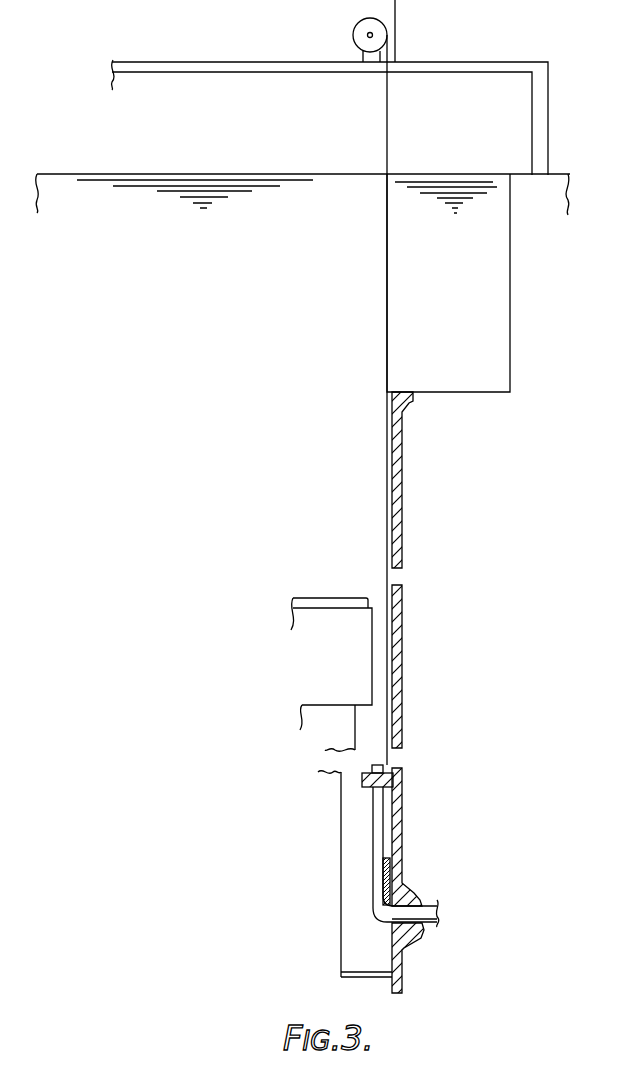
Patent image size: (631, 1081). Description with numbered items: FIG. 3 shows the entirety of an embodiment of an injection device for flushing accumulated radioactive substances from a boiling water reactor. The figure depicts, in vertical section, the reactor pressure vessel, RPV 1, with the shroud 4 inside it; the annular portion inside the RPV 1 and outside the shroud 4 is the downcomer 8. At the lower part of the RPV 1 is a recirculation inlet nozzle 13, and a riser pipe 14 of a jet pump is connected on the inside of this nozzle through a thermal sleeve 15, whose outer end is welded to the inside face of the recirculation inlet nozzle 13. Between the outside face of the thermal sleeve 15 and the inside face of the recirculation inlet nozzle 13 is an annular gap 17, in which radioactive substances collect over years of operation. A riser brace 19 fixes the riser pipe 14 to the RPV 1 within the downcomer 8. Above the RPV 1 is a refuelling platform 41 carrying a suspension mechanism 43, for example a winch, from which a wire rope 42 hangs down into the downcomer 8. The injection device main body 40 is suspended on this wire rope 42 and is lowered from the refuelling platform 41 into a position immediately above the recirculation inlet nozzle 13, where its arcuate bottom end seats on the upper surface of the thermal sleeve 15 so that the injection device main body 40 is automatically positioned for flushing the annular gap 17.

The RPV 1 is at (403, 503).
The shroud 4 is at (341, 872).
The downcomer 8 is at (365, 723).
The recirculation inlet nozzle 13 is at (427, 933).
The riser pipe 14 is at (375, 826).
The thermal sleeve 15 is at (423, 913).
The annular gap 17 is at (406, 924).
The riser brace 19 is at (362, 786).
The injection device main body 40 is at (390, 875).
The refuelling platform 41 is at (167, 62).
The wire rope 42 is at (388, 578).
The suspension mechanism 43 is at (395, 27).